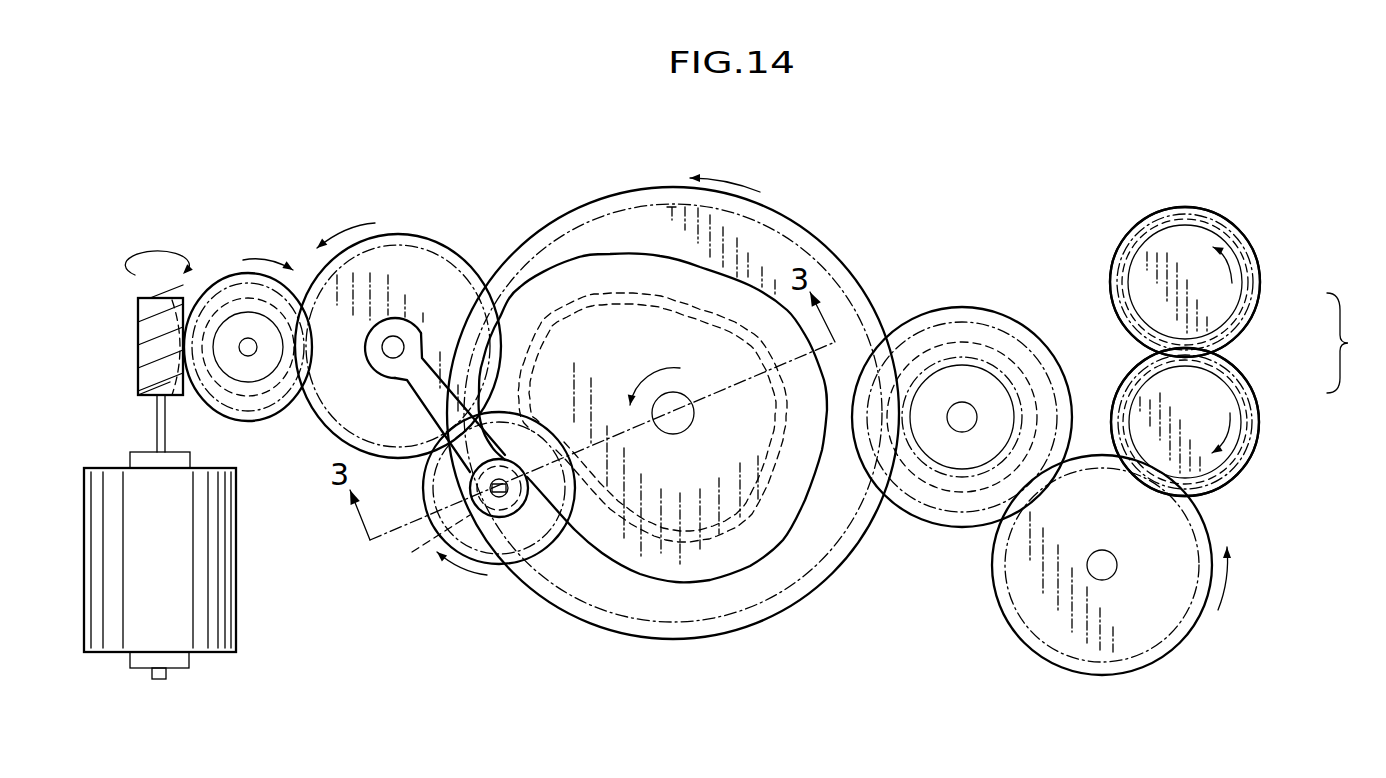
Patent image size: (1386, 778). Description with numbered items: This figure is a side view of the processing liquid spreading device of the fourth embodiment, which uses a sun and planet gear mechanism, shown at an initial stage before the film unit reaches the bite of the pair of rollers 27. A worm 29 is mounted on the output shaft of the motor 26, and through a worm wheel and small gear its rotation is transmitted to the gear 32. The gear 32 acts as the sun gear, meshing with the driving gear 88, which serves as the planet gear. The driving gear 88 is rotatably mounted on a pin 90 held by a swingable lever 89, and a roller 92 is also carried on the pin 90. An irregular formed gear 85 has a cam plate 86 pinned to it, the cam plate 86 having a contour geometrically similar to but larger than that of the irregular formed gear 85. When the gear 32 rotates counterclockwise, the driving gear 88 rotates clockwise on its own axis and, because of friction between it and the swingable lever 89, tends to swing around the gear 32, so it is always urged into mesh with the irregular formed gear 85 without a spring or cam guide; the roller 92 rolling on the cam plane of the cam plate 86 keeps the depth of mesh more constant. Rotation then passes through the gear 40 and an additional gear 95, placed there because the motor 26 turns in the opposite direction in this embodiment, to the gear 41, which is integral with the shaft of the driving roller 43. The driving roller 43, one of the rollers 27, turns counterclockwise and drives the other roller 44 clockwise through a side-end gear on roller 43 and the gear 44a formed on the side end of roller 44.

The motor 26 is at (213, 630).
The worm 29 is at (140, 327).
The gear 32 is at (417, 235).
The irregular formed gear 85 is at (622, 295).
The cam plate 86 is at (740, 568).
The driving gear 88 is at (500, 565).
The swingable lever 89 is at (425, 398).
The pin 90 is at (500, 478).
The roller 92 is at (412, 552).
The gear 40 is at (924, 302).
The additional gear 95 is at (1102, 676).
The gear 41 is at (1247, 460).
The driving roller 43 is at (1253, 413).
The roller 44 is at (1253, 293).
The gear 44a is at (1197, 208).
The pair of rollers 27 is at (1356, 343).